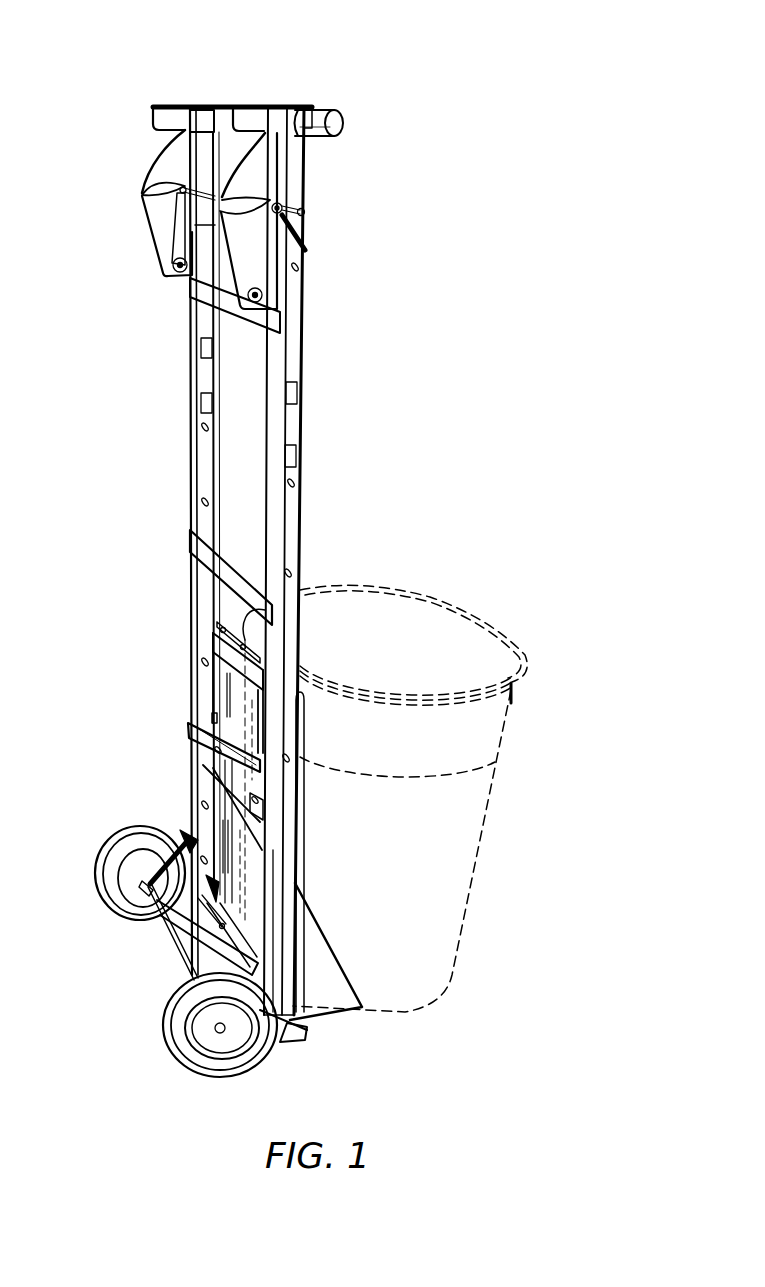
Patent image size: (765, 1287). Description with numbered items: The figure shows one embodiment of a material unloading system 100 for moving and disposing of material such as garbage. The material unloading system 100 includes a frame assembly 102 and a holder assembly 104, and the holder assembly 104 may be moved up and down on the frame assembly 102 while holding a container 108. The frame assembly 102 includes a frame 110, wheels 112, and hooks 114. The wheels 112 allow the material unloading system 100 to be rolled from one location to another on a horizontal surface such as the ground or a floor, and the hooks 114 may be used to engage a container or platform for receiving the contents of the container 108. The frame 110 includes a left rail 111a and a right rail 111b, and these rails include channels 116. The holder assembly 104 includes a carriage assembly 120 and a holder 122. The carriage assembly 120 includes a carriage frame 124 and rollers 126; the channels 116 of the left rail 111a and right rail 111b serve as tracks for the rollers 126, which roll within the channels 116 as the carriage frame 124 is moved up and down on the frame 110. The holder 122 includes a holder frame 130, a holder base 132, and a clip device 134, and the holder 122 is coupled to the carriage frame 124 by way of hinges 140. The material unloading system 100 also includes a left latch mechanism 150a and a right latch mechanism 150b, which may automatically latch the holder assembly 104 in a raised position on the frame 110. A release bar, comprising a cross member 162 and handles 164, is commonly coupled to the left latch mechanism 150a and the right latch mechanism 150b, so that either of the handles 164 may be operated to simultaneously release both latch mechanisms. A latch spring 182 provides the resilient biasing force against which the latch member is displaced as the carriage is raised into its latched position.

The material unloading system 100 is at (352, 60).
The frame assembly 102 is at (325, 486).
The holder assembly 104 is at (307, 731).
The container 108 is at (393, 590).
The frame 110 is at (303, 345).
The left rail 111a is at (193, 380).
The right rail 111b is at (302, 413).
The wheels 112 is at (132, 832).
The hooks 114 is at (171, 113).
The channels 116 is at (203, 440).
The carriage assembly 120 is at (208, 645).
The holder 122 is at (307, 831).
The carriage frame 124 is at (237, 675).
The rollers 126 is at (200, 723).
The holder frame 130 is at (293, 865).
The holder base 132 is at (320, 945).
The clip device 134 is at (243, 600).
The hinges 140 is at (220, 630).
The left latch mechanism 150a is at (152, 177).
The right latch mechanism 150b is at (262, 278).
The cross member 162 is at (207, 193).
The handles 164 is at (305, 213).
The latch spring 182 is at (307, 245).